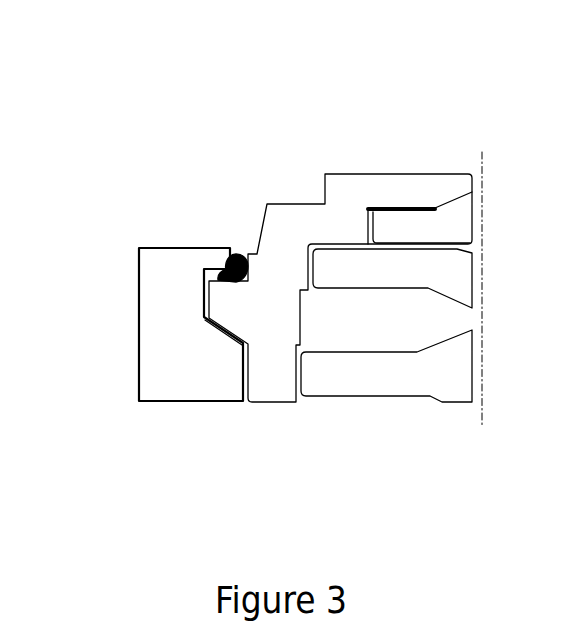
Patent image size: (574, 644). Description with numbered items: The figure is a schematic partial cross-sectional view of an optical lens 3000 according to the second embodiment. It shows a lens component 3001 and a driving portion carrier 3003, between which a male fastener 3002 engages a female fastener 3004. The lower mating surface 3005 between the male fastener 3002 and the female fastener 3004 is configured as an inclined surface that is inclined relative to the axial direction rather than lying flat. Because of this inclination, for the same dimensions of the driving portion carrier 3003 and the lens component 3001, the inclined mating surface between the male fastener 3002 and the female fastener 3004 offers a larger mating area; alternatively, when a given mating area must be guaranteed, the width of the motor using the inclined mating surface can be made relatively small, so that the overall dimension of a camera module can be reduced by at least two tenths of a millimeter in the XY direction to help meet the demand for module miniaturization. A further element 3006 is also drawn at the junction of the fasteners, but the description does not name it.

The optical lens 3000 is at (388, 127).
The lens component 3001 is at (339, 213).
The male fastener 3002 is at (231, 302).
The driving portion carrier 3003 is at (167, 327).
The female fastener 3004 is at (203, 288).
The lower mating surface 3005 is at (477, 155).
The seal ring 3006 is at (233, 258).